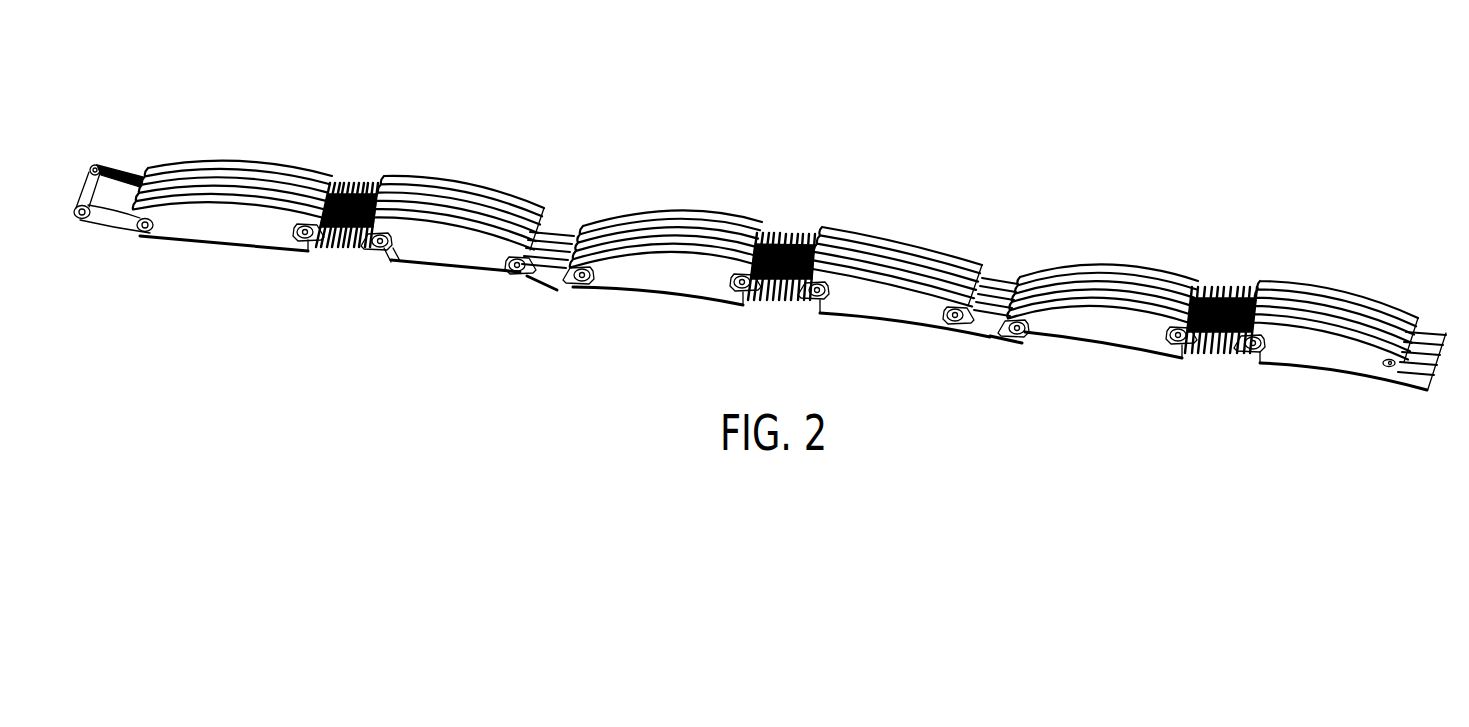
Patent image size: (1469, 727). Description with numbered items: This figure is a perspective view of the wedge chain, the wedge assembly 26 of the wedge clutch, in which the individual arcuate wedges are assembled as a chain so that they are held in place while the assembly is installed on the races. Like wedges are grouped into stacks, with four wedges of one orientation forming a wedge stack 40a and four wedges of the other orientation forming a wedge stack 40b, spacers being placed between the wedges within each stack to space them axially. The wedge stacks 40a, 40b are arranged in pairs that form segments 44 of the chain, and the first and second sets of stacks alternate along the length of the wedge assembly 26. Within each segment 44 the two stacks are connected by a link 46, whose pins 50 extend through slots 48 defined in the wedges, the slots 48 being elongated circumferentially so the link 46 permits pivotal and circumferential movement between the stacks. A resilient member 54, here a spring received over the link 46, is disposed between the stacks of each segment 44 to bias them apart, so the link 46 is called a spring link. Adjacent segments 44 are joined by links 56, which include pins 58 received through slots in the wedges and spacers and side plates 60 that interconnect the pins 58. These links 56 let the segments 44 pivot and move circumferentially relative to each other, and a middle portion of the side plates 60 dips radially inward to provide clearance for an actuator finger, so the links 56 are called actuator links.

The wedge assembly 26 is at (985, 94).
The wedge stack 40a is at (452, 197).
The wedge stack 40b is at (222, 187).
The segment 44 is at (1445, 238).
The link 46 is at (348, 193).
The slot 48 is at (389, 246).
The pin 50 is at (378, 250).
The resilient member 54 is at (322, 246).
The link 56 is at (563, 281).
The pin 58 is at (517, 272).
The side plate 60 is at (997, 334).